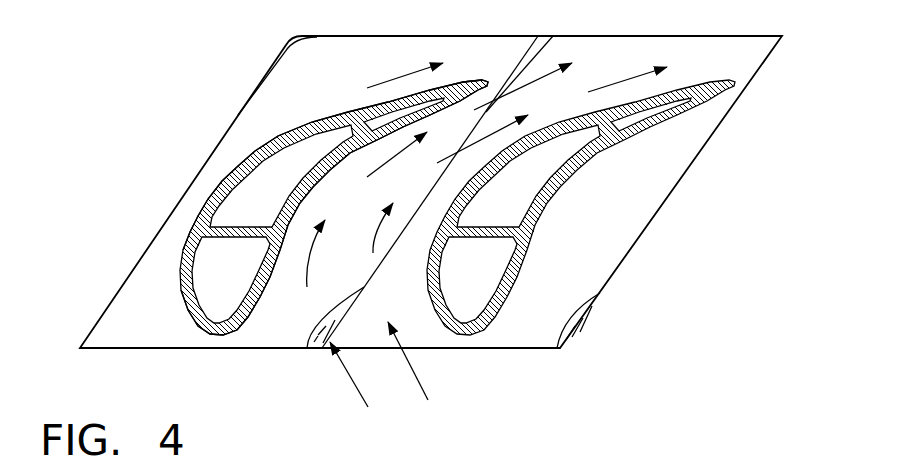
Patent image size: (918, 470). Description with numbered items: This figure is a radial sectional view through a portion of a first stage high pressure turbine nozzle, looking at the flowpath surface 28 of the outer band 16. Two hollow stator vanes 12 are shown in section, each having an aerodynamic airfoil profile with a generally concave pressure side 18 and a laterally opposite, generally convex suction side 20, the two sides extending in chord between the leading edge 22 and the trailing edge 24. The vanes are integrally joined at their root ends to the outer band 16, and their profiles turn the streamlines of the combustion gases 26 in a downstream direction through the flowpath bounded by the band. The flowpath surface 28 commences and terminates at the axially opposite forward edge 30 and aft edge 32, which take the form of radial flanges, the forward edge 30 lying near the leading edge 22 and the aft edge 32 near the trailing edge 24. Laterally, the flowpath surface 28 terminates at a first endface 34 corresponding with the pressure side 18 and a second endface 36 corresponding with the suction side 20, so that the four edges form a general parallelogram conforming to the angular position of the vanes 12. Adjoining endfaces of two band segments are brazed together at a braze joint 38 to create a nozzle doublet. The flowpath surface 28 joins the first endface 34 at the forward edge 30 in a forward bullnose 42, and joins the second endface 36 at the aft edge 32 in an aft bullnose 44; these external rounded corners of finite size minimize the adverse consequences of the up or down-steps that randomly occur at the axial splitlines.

The stator vane 12 is at (303, 214).
The outer band 16 is at (636, 247).
The pressure side 18 is at (314, 190).
The suction side 20 is at (257, 156).
The leading edge 22 is at (222, 335).
The trailing edge 24 is at (489, 78).
The combustion gases 26 is at (418, 376).
The flowpath surface 28 is at (293, 318).
The forward edge 30 is at (517, 350).
The aft edge 32 is at (668, 36).
The first endface 34 is at (367, 272).
The second endface 36 is at (366, 272).
The braze joint 38 is at (479, 106).
The forward bullnose 42 is at (320, 325).
The aft bullnose 44 is at (548, 37).